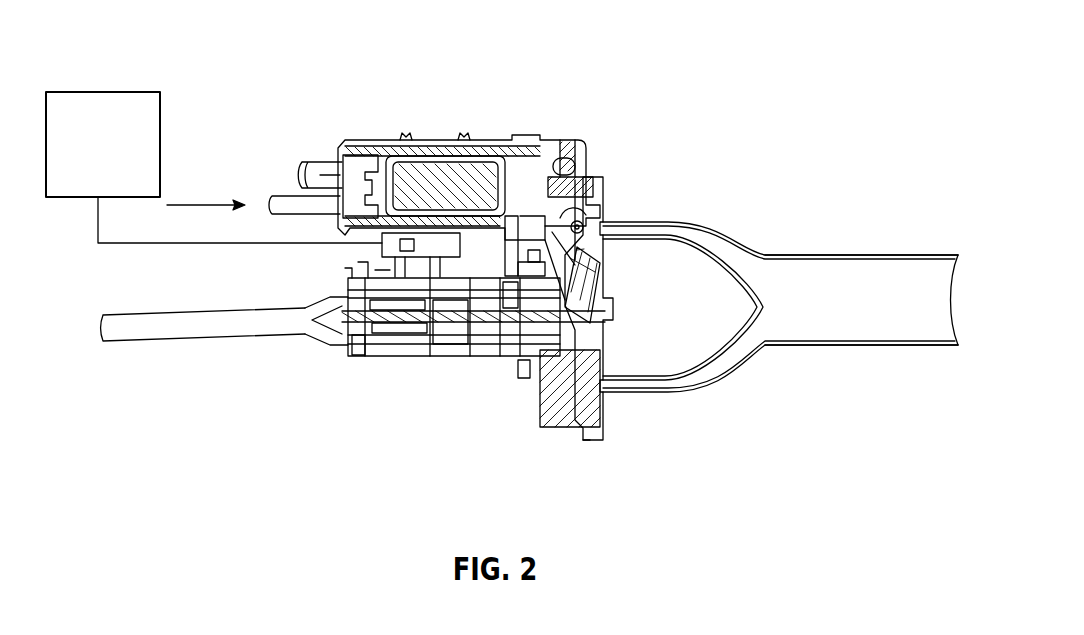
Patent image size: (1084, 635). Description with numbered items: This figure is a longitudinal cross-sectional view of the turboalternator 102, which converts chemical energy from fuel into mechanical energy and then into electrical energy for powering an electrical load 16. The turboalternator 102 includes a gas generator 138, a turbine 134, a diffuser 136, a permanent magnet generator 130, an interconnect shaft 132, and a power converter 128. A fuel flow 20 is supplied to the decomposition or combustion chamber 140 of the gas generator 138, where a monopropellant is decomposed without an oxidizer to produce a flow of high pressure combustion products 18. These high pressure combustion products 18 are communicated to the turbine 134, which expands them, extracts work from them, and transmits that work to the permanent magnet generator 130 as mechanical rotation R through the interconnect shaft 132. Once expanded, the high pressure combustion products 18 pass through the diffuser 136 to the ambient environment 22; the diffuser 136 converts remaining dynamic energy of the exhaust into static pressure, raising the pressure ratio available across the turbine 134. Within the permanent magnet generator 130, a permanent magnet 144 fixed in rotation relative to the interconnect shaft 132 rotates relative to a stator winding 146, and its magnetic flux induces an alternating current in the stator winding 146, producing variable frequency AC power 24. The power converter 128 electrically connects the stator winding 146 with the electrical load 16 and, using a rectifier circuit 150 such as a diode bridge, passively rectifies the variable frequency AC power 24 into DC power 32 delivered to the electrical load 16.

The electrical load 16 is at (88, 91).
The high pressure combustion products 18 is at (627, 168).
The fuel flow 20 is at (199, 200).
The ambient environment 22 is at (818, 212).
The variable frequency alternating current power 24 is at (410, 275).
The direct current power 32 is at (77, 236).
The turboalternator 102 is at (263, 484).
The power converter 128 is at (378, 248).
The permanent magnet generator 130 is at (353, 371).
The interconnect shaft 132 is at (455, 357).
The turbine 134 is at (655, 333).
The diffuser 136 is at (752, 386).
The gas generator 138 is at (432, 124).
The decomposition or combustion chamber 140 is at (468, 170).
The permanent magnet 144 is at (388, 356).
The stator winding 146 is at (415, 356).
The rectifier circuit 150 is at (445, 228).
The mechanical rotation R is at (513, 340).